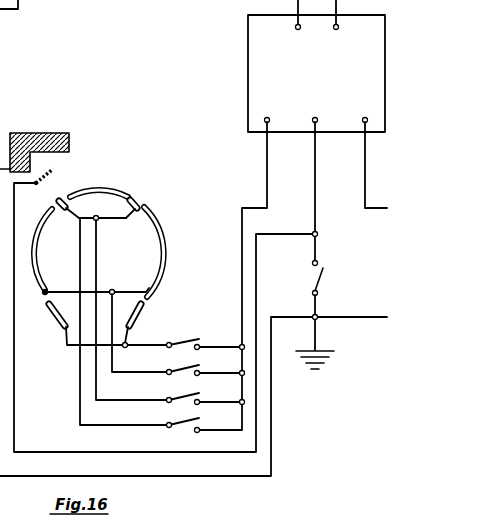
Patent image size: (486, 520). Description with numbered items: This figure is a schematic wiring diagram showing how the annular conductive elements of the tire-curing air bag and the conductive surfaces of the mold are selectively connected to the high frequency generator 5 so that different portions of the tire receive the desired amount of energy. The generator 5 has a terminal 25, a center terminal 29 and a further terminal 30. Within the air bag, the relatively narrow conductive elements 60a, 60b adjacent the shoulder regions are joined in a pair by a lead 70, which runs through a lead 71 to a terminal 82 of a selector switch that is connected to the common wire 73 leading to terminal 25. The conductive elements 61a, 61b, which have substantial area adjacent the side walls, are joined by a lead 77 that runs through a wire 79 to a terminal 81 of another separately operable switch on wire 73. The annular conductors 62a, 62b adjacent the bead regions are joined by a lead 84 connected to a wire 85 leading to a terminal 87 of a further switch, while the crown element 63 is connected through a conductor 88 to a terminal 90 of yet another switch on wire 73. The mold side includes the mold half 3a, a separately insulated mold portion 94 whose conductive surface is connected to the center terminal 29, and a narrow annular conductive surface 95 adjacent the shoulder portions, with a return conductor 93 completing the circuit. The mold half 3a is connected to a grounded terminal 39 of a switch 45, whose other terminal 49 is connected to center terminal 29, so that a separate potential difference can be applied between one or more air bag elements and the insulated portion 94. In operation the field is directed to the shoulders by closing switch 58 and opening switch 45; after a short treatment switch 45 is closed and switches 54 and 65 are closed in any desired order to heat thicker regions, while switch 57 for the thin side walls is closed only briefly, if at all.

The mold half 3a is at (42, 132).
The annular separately insulated portion of the mold 94 is at (55, 169).
The annular conductive surface 95 is at (37, 187).
The return conductor 93 is at (16, 389).
The high frequency generator 5 is at (248, 47).
The terminal of the radio frequency generator 25 is at (268, 116).
The center terminal of the generator 29 is at (315, 117).
The terminal 30 is at (365, 117).
The wire 73 is at (239, 275).
The terminal of switch 49 is at (317, 262).
The switch 45 is at (319, 282).
The grounded terminal 39 is at (318, 316).
The annular conductive element 63 is at (110, 191).
The annular conductive element 61a is at (166, 244).
The annular conductive element 61b is at (35, 274).
The annular conductive element 60a is at (139, 200).
The annular conductive element 60b is at (60, 198).
The lead 70 is at (123, 220).
The lead 71 is at (100, 264).
The lead 77 is at (127, 292).
The annular conductor 62a is at (150, 312).
The annular conductor 62b is at (53, 309).
The lead 84 is at (70, 347).
The wire 85 is at (196, 339).
The switch 54 is at (200, 341).
The switch 57 is at (199, 371).
The switch 58 is at (199, 398).
The switch 65 is at (199, 425).
The terminal of switch 87 is at (167, 349).
The terminal of switch 81 is at (168, 375).
The terminal of selector switch 82 is at (167, 403).
The terminal of switch 90 is at (167, 428).
The wire 79 is at (99, 372).
The conductor 88 is at (78, 408).